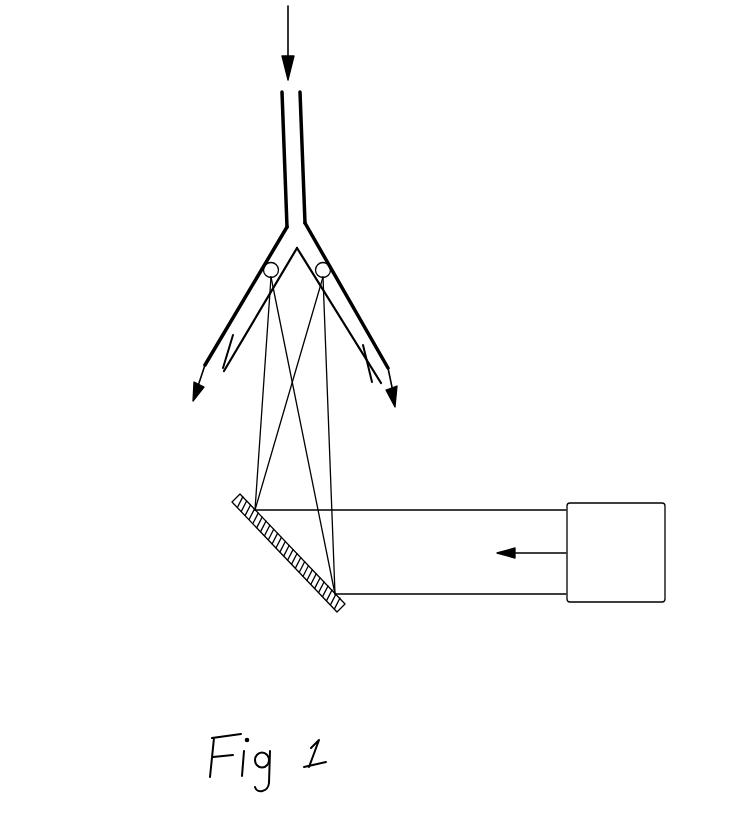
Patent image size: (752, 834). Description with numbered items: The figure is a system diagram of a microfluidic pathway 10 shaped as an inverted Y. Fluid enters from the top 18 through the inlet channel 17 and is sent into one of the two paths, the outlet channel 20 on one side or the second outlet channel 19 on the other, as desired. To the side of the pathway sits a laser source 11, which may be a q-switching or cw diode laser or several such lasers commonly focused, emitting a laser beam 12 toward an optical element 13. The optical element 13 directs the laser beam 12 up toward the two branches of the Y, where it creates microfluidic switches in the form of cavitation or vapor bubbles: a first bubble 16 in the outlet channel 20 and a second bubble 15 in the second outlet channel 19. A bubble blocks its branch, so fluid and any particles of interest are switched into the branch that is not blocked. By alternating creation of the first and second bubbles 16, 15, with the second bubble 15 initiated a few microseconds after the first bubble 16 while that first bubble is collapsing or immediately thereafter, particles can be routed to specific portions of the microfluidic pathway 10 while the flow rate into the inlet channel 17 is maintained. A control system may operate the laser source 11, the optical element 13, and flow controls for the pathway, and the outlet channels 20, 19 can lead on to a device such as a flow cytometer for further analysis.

The microfluidic pathway 10 is at (177, 90).
The laser source 11 is at (616, 520).
The laser beam 12 is at (410, 435).
The optical element 13 is at (260, 553).
The second bubble 15 is at (367, 235).
The first bubble 16 is at (239, 267).
The inlet channel 17 is at (362, 251).
The top 18 is at (337, 124).
The second outlet channel 19 is at (437, 387).
The outlet channel 20 is at (133, 383).